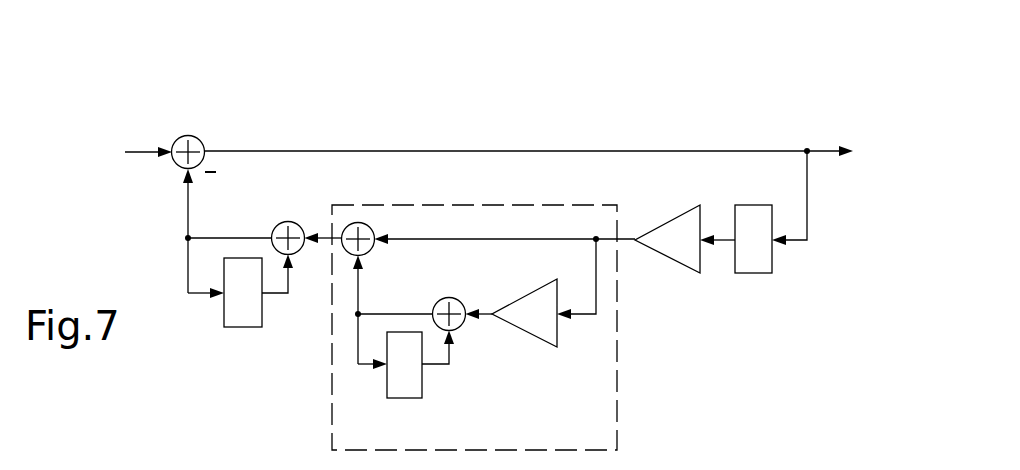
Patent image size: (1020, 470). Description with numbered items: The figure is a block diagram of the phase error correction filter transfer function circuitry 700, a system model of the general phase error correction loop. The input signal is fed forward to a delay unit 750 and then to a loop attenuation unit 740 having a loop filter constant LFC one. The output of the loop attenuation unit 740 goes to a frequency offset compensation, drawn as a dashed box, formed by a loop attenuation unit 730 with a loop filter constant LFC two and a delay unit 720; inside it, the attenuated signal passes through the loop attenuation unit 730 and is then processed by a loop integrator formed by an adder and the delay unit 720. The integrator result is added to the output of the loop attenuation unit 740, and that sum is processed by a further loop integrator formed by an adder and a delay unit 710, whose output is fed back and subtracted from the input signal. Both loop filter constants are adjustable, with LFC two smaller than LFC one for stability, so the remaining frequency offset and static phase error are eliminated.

The phase error correction filter transfer function circuitry 700 is at (658, 113).
The delay unit 710 is at (245, 327).
The delay unit 720 is at (405, 398).
The loop attenuation unit 730 is at (525, 295).
The loop attenuation unit 740 is at (668, 222).
The delay unit 750 is at (752, 273).